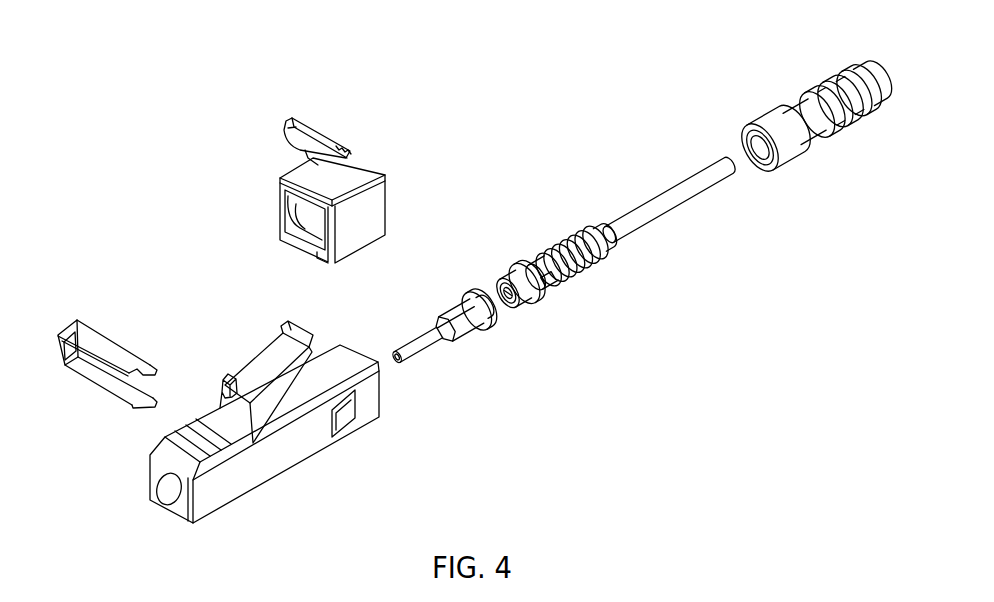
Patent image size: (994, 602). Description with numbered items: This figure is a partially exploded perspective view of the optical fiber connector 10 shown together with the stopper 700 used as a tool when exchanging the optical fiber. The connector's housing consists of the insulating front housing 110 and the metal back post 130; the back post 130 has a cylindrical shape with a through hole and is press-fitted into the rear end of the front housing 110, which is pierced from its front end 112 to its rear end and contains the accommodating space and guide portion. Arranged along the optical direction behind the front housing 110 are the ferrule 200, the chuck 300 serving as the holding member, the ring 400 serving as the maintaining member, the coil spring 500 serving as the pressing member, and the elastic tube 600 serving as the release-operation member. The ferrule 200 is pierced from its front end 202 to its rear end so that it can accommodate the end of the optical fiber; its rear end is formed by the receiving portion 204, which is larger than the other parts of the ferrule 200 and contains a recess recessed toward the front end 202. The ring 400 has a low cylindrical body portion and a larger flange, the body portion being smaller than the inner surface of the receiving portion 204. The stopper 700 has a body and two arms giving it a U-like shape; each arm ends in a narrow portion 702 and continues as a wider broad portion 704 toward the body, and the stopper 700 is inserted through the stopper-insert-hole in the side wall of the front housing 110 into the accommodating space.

The optical fiber connector 10 is at (486, 110).
The front housing 110 is at (295, 448).
The front end 112 is at (178, 512).
The back post 130 is at (792, 160).
The ferrule 200 is at (438, 337).
The front end 202 is at (397, 367).
The receiving portion 204 is at (487, 325).
The chuck 300 is at (537, 262).
The ring 400 is at (533, 297).
The coil spring 500 is at (584, 228).
The tube 600 is at (693, 200).
The stopper 700 is at (120, 355).
The narrow portion 702 is at (157, 367).
The broad portion 704 is at (112, 342).